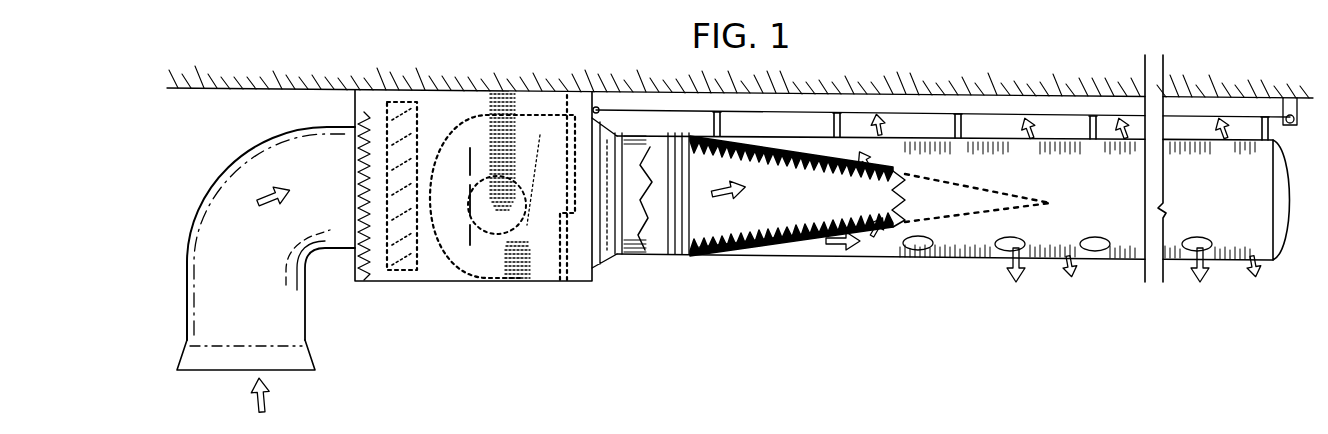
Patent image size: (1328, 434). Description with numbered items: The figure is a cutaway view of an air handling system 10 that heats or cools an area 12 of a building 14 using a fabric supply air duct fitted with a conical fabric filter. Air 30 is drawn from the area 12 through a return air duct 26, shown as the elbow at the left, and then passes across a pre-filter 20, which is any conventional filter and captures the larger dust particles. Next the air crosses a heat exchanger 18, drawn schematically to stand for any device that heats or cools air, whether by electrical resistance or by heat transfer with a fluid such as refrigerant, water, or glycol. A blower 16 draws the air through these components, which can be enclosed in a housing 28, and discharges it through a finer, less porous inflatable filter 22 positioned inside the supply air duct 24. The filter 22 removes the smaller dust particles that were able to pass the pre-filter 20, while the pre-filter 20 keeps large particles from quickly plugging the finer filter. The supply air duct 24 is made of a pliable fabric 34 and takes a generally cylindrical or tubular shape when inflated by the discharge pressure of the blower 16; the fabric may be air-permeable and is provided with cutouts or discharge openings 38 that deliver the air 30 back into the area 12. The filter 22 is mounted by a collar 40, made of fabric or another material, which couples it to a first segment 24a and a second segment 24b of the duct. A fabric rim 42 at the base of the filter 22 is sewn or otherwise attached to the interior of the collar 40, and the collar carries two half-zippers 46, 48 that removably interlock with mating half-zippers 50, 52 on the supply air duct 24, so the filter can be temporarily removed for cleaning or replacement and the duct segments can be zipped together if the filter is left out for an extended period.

The air handling system 10 is at (962, 52).
The area 12 is at (886, 297).
The building 14 is at (278, 90).
The blower 16 is at (541, 265).
The heat exchanger 18 is at (442, 254).
The pre-filter 20 is at (378, 246).
The inflatable filter 22 is at (777, 245).
The supply air duct 24 is at (983, 262).
The first segment 24a is at (646, 255).
The second segment 24b is at (865, 255).
The return air duct 26 is at (208, 205).
The housing 28 is at (447, 283).
The air 30 is at (256, 198).
The pliable fabric 34 is at (1128, 232).
The discharge openings 38 is at (930, 257).
The collar 40 is at (683, 255).
The fabric rim 42 is at (690, 255).
The half-zipper 46 is at (678, 255).
The half-zipper 48 is at (698, 255).
The half-zipper 50 is at (670, 255).
The half-zipper 52 is at (700, 255).